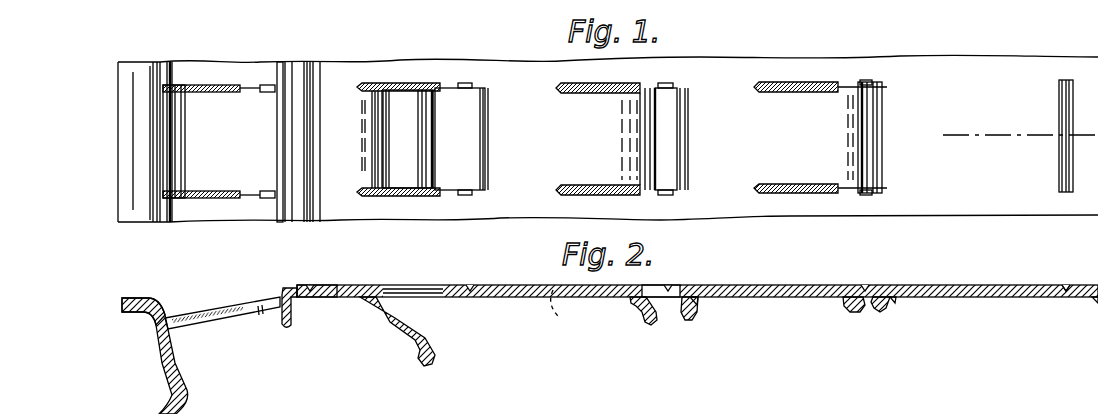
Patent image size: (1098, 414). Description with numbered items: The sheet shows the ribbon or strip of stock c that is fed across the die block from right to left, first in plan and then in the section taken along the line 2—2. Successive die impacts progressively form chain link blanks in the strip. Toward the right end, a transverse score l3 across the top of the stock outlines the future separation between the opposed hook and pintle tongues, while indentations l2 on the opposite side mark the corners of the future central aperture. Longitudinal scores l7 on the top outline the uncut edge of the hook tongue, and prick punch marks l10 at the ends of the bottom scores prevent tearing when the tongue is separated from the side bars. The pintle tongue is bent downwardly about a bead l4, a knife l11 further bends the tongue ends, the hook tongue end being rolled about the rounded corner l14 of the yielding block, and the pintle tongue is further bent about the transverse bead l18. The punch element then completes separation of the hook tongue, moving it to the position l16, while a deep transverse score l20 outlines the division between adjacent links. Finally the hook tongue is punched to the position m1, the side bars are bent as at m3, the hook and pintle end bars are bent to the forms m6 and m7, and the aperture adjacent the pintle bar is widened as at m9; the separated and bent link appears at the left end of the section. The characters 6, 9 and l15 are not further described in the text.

In FIG. 1, the strip of stock c is at (958, 64).
In FIG. 2, the strip of stock c is at (990, 297).
In FIG. 1, the section line 2 is at (106, 142).
In FIG. 1, the end flange 6 is at (133, 170).
In FIG. 1, the slot 9 is at (277, 90).
In FIG. 1, the hook tongue position m1 is at (173, 142).
In FIG. 2, the hook tongue position m1 is at (172, 353).
In FIG. 2, the bent side bars position m3 is at (248, 298).
In FIG. 2, the bent hook end bar m6 is at (148, 296).
In FIG. 1, the bent pintle end bar m7 is at (282, 163).
In FIG. 2, the bent pintle end bar m7 is at (284, 292).
In FIG. 1, the widened aperture portion m9 is at (263, 190).
In FIG. 2, the widened aperture portion m9 is at (273, 307).
In FIG. 2, the indentations l2 is at (893, 294).
In FIG. 1, the transverse score l3 is at (1062, 113).
In FIG. 2, the transverse score l3 is at (1071, 285).
In FIG. 2, the bead l4 is at (692, 298).
In FIG. 1, the longitudinal score l7 is at (398, 88).
In FIG. 2, the punch marks l10 is at (568, 309).
In FIG. 1, the knife l11 is at (670, 148).
In FIG. 2, the knife l11 is at (675, 285).
In FIG. 2, the rounded corner l14 is at (632, 302).
In FIG. 1, the clip l15 is at (868, 158).
In FIG. 2, the clip l15 is at (870, 293).
In FIG. 1, the separated hook tongue position l16 is at (425, 139).
In FIG. 2, the separated hook tongue position l16 is at (407, 320).
In FIG. 2, the transverse bead l18 is at (698, 297).
In FIG. 1, the transverse score l20 is at (311, 60).
In FIG. 2, the transverse score l20 is at (313, 285).